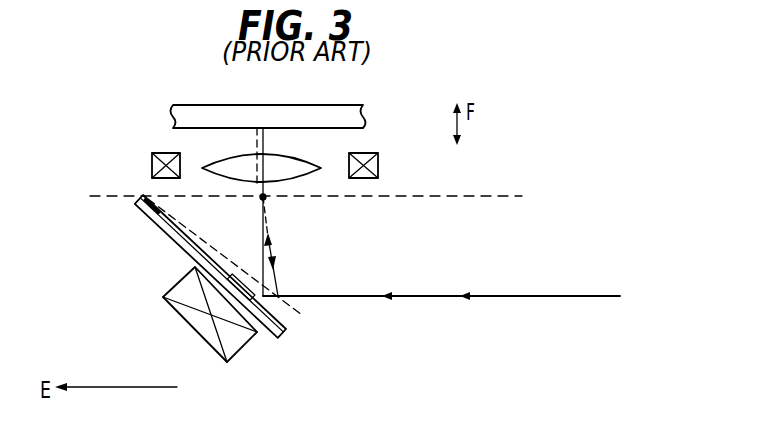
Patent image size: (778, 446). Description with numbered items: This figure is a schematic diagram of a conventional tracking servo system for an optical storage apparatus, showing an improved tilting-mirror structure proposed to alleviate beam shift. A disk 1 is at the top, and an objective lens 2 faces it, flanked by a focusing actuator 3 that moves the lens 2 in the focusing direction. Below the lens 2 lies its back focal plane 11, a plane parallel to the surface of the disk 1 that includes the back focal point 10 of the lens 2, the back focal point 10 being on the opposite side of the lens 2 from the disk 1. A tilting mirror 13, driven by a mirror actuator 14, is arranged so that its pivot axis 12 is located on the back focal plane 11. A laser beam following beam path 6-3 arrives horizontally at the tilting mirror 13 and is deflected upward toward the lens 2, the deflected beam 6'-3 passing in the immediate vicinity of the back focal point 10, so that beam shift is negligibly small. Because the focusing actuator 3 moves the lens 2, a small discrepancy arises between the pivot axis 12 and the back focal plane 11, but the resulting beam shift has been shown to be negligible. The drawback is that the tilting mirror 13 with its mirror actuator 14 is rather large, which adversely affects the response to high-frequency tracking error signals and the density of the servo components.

The disk 1 is at (363, 107).
The objective lens 2 is at (233, 178).
The focusing actuator 3 is at (152, 157).
The back focal point 10 is at (265, 199).
The back focal plane 11 is at (447, 194).
The pivot axis 12 is at (140, 204).
The tilting mirror 13 is at (165, 233).
The mirror actuator 14 is at (241, 351).
The beam path 6-3 is at (553, 295).
The reflected light beam 6'-3 is at (300, 246).